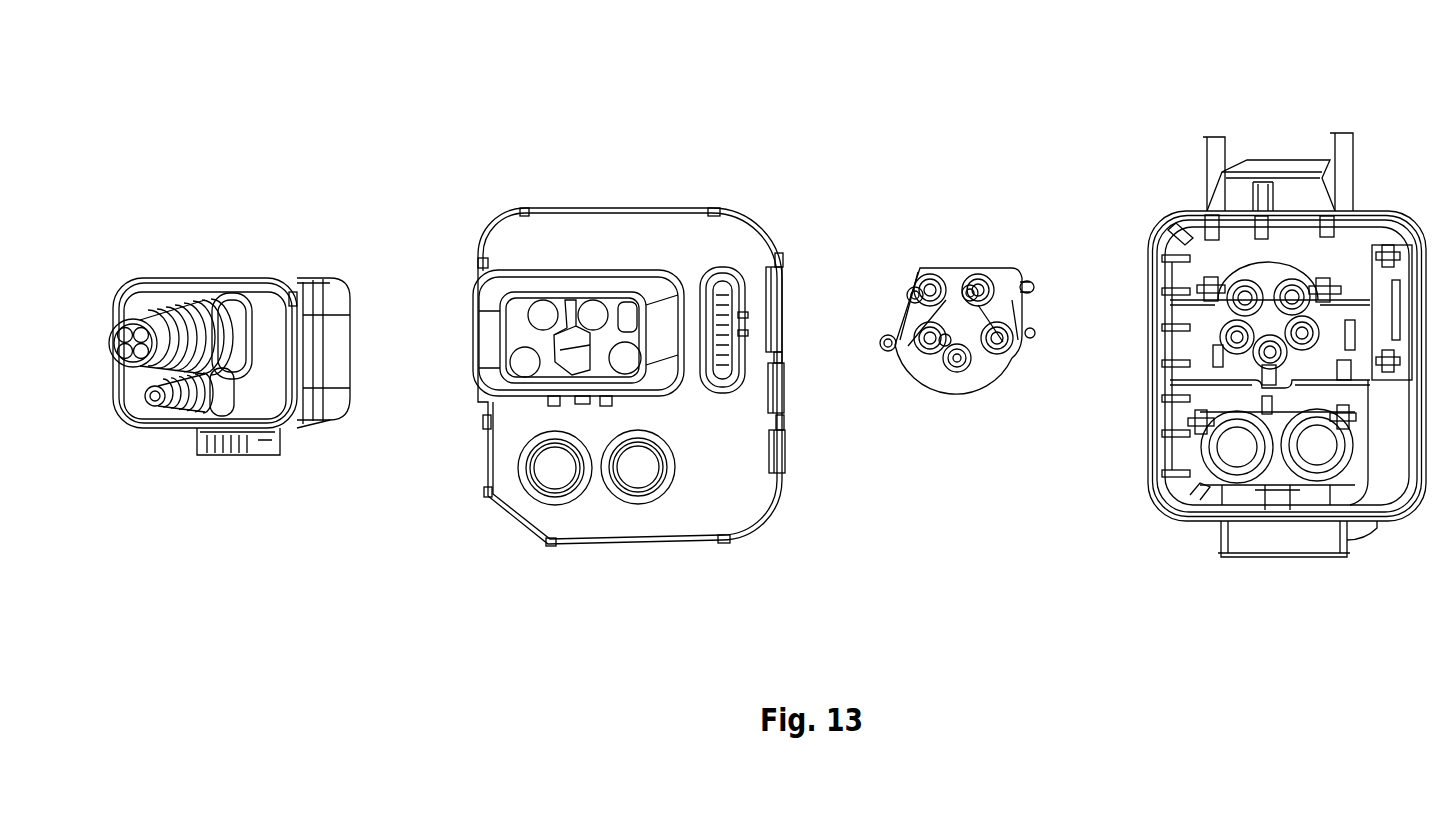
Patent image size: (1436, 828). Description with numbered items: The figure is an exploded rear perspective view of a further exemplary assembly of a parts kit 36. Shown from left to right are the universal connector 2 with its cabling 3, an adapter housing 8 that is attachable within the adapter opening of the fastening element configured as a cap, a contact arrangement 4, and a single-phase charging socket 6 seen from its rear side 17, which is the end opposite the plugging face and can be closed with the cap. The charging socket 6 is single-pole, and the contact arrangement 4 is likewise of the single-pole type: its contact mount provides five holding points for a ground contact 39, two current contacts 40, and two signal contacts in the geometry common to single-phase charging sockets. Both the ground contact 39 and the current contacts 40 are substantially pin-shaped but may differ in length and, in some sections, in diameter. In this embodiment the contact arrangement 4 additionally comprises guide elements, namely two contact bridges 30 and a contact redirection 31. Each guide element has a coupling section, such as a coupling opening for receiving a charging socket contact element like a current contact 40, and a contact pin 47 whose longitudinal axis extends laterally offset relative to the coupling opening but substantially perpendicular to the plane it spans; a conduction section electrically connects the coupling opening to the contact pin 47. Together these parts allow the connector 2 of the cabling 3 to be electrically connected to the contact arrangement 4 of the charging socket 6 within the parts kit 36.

The connector 2 is at (270, 268).
The cabling 3 is at (100, 355).
The contact arrangement 4 is at (956, 315).
The single-phase charging socket 6 is at (1259, 330).
The adapter housing 8 is at (663, 255).
The rear side 17 is at (1138, 390).
The contact bridge 30 is at (887, 296).
The contact redirection 31 is at (930, 372).
The parts kit 36 is at (1350, 45).
The ground contact 39 is at (958, 366).
The current contact 40 is at (928, 283).
The contact pin 47 is at (898, 350).